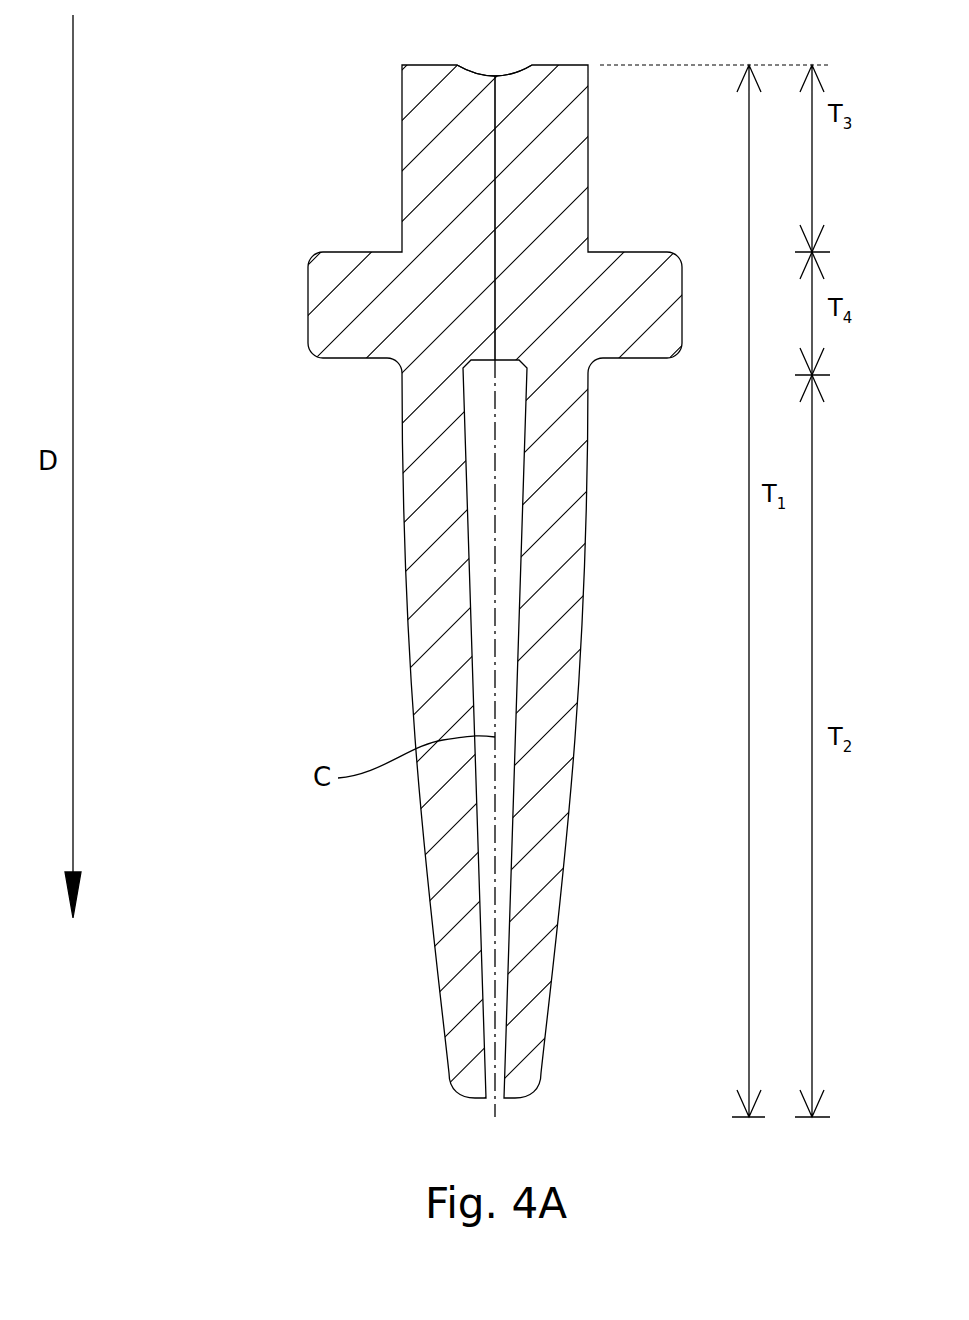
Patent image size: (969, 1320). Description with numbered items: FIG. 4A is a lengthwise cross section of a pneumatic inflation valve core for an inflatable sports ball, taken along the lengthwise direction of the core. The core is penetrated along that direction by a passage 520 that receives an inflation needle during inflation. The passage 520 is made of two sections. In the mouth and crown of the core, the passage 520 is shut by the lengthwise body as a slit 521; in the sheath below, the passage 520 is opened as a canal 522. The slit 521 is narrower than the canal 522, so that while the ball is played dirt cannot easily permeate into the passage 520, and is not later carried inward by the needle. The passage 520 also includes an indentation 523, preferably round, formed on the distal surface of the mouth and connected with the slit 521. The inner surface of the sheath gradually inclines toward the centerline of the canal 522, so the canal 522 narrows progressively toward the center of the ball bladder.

The passage 520 is at (188, 606).
The slit 521 is at (497, 127).
The canal 522 is at (485, 560).
The indentation 523 is at (467, 72).